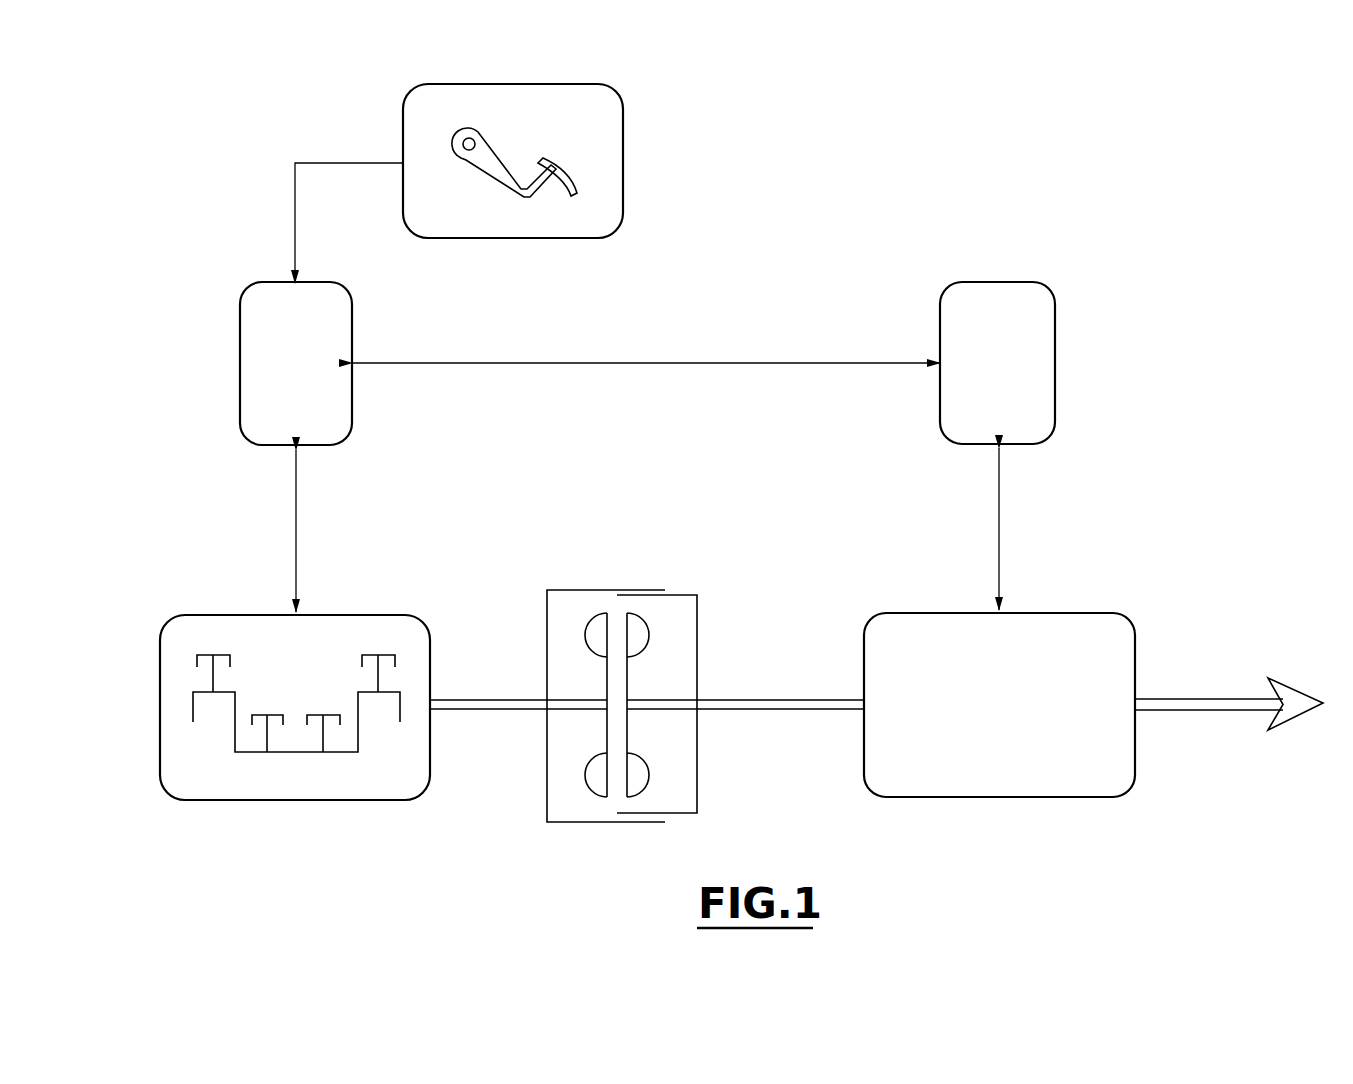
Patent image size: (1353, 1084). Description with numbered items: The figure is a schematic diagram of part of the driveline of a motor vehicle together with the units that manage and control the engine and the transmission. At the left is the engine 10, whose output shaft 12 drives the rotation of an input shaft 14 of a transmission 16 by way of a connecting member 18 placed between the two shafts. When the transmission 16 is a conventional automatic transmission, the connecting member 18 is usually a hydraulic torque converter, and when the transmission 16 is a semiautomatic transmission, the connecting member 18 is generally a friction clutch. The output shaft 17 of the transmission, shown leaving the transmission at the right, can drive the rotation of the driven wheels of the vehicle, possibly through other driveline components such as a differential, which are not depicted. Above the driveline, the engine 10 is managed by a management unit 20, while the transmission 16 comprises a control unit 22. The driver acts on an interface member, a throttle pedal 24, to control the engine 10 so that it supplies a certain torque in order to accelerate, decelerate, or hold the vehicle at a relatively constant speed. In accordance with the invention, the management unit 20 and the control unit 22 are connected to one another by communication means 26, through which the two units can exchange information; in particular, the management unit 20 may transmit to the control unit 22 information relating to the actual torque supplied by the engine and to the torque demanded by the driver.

The engine 10 is at (348, 620).
The output shaft 12 is at (490, 712).
The input shaft 14 is at (795, 712).
The transmission 16 is at (1067, 625).
The output shaft 17 is at (1178, 700).
The connecting member 18 is at (597, 595).
The management unit 20 is at (346, 395).
The control unit 22 is at (1054, 330).
The throttle pedal 24 is at (600, 207).
The communication means 26 is at (690, 362).